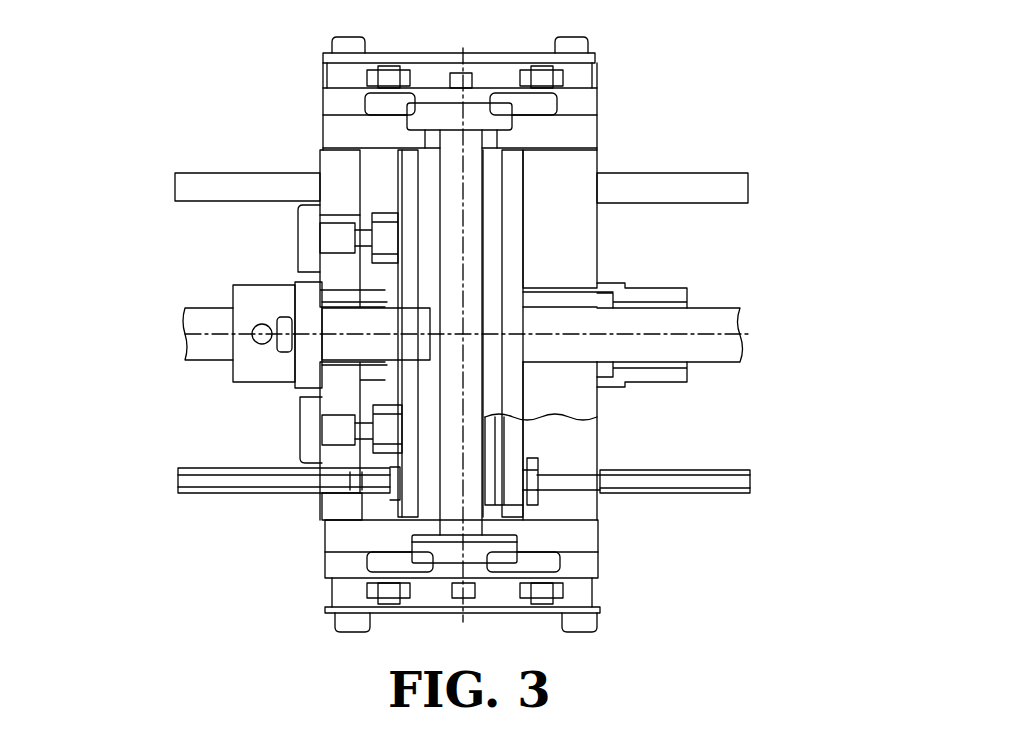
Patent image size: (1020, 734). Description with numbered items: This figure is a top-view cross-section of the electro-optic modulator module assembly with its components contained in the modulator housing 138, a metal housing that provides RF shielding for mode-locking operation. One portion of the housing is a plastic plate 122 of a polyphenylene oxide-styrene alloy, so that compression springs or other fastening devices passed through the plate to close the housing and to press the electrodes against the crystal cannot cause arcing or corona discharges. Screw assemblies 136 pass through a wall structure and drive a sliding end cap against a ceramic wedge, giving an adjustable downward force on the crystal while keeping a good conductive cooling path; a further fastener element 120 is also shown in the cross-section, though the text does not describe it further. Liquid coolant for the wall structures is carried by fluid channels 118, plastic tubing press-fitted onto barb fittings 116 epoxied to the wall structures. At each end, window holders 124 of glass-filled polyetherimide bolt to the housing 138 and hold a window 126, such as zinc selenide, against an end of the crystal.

The barb fittings 116 is at (338, 515).
The fluid channels 118 is at (228, 493).
The fastening bolt 120 is at (355, 278).
The plastic plate 122 is at (323, 167).
The window holders 124 is at (600, 535).
The window 126 is at (512, 556).
The screw assemblies 136 is at (305, 442).
The modulator housing 138 is at (582, 263).